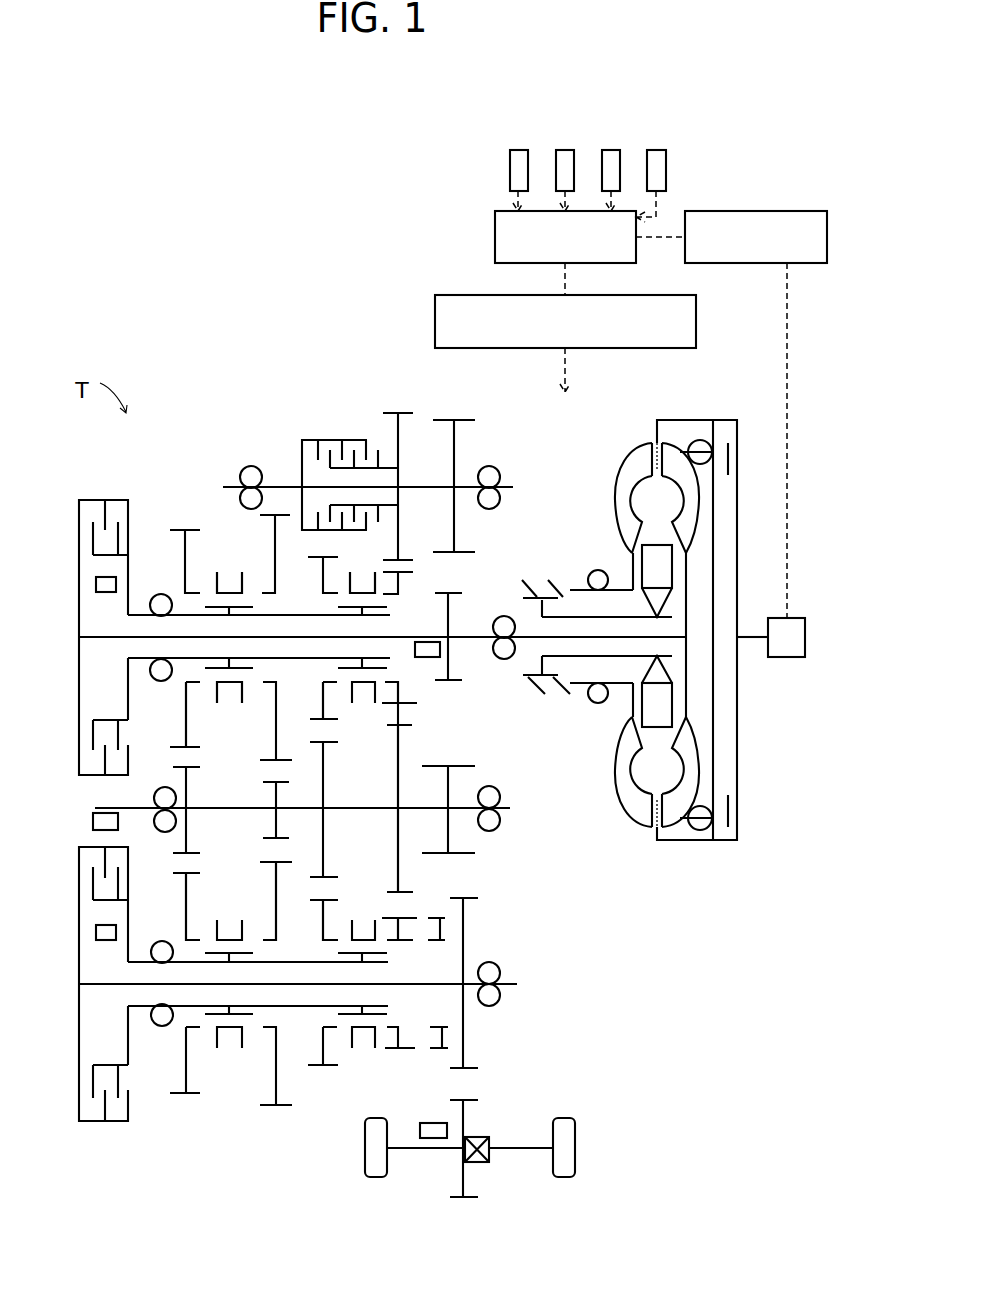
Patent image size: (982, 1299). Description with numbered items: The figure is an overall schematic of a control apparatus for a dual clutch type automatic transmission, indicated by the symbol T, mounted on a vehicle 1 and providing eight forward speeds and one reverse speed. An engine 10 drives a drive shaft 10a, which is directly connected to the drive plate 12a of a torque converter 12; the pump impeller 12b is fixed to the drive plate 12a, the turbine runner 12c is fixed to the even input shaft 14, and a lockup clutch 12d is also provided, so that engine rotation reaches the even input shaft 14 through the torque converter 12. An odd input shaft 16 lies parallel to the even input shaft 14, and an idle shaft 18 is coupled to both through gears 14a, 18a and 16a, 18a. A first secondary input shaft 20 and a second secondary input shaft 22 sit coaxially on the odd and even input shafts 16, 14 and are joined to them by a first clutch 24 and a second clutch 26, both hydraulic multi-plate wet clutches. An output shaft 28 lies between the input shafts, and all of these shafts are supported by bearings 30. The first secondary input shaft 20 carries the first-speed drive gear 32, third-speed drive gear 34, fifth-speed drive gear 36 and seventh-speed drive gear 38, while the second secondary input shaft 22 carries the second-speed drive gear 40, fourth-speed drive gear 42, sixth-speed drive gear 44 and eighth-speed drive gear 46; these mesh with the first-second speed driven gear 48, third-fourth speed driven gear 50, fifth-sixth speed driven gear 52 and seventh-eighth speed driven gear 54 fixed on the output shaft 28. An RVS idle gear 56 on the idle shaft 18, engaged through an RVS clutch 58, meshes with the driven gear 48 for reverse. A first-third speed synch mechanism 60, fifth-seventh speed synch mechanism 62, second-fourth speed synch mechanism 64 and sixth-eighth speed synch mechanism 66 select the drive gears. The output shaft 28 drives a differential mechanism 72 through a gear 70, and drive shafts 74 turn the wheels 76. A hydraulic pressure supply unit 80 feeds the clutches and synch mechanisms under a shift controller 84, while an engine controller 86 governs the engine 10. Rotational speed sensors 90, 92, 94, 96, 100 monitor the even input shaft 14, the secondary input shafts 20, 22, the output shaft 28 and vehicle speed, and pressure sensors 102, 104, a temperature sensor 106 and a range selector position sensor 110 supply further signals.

The vehicle 1 is at (603, 1086).
The engine 10 is at (800, 617).
The drive shaft 10a is at (750, 638).
The torque converter 12 is at (656, 614).
The drive plate 12a is at (705, 420).
The pump impeller 12b is at (628, 462).
The turbine runner 12c is at (700, 757).
The lockup clutch 12d is at (715, 840).
The even input shaft 14 is at (480, 634).
The gear 14a is at (448, 681).
The odd input shaft 16 is at (512, 984).
The gear 16a is at (474, 898).
The idle shaft 18 is at (505, 478).
The gear 18a is at (467, 552).
The first secondary input shaft 20 is at (363, 962).
The second secondary input shaft 22 is at (390, 615).
The first clutch 24 is at (115, 1122).
The second clutch 26 is at (115, 499).
The output shaft 28 is at (508, 806).
The bearings 30 is at (502, 497).
The first-speed drive gear 32 is at (410, 918).
The third-speed drive gear 34 is at (318, 903).
The fifth-speed drive gear 36 is at (179, 875).
The seventh-speed drive gear 38 is at (272, 865).
The second-speed drive gear 40 is at (405, 705).
The fourth-speed drive gear 42 is at (316, 718).
The sixth-speed drive gear 44 is at (179, 745).
The eighth-speed drive gear 46 is at (262, 758).
The first-second speed driven gear 48 is at (403, 728).
The third-fourth speed driven gear 50 is at (330, 745).
The fifth-sixth speed driven gear 52 is at (194, 769).
The seventh-eighth speed driven gear 54 is at (281, 782).
The RVS idle gear 56 is at (398, 412).
The RVS clutch 58 is at (312, 438).
The first-third speed synch mechanism 60 is at (363, 1038).
The fifth-seventh speed synch mechanism 62 is at (229, 1040).
The second-fourth speed synch mechanism 64 is at (363, 590).
The sixth-eighth speed synch mechanism 66 is at (229, 590).
The gear 70 is at (475, 1100).
The differential mechanism 72 is at (485, 1135).
The drive shafts 74 is at (520, 1150).
The wheels 76 is at (365, 1148).
The hydraulic pressure supply unit 80 is at (490, 295).
The shift controller 84 is at (495, 222).
The engine controller 86 is at (727, 211).
The first rotational speed sensor 90 is at (427, 658).
The second rotational speed sensor 92 is at (107, 595).
The third rotational speed sensor 94 is at (107, 942).
The fourth rotational speed sensor 96 is at (92, 821).
The fifth rotational speed sensor 100 is at (428, 1122).
The first pressure sensor 102 is at (520, 147).
The second pressure sensor 104 is at (565, 147).
The temperature sensor 106 is at (612, 147).
The range selector position sensor 110 is at (665, 147).